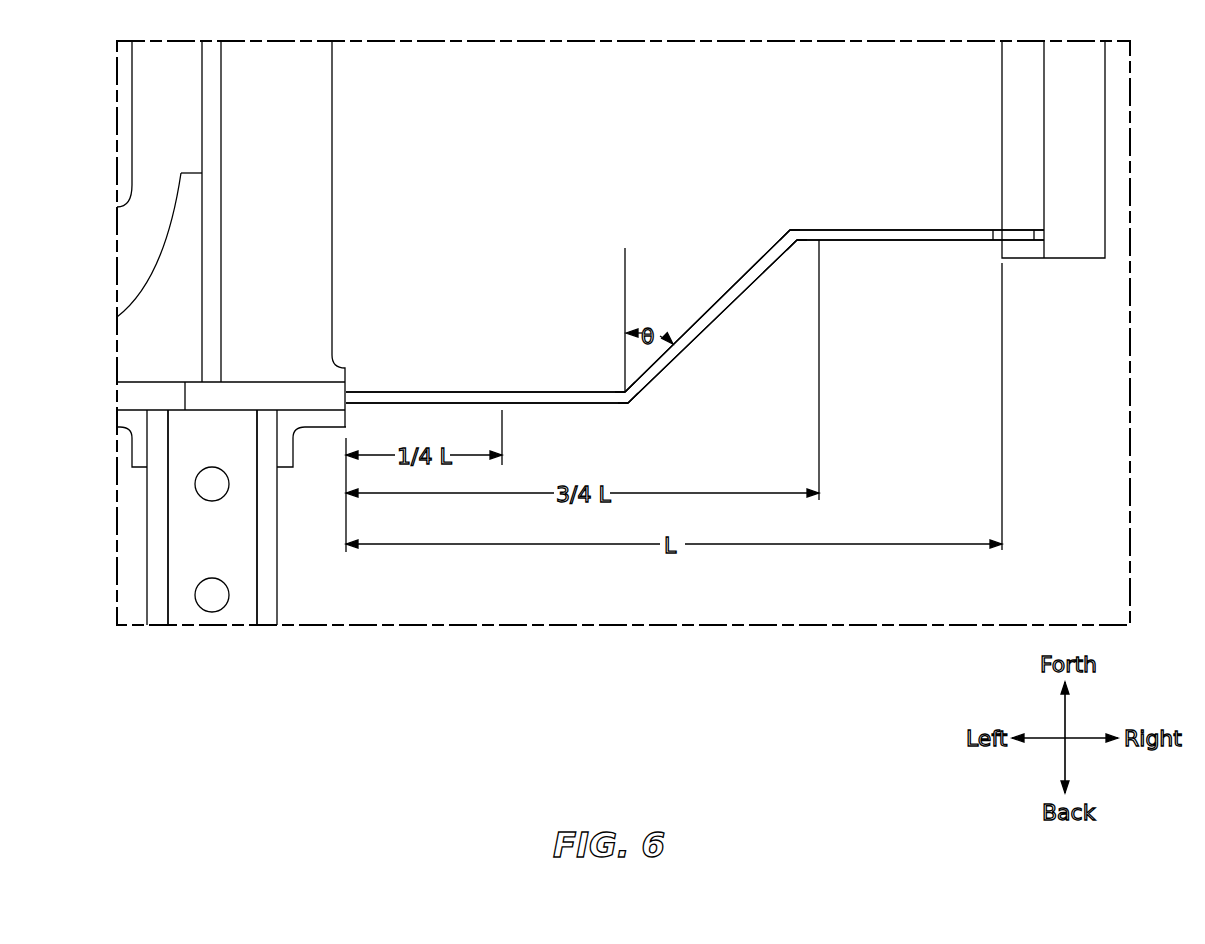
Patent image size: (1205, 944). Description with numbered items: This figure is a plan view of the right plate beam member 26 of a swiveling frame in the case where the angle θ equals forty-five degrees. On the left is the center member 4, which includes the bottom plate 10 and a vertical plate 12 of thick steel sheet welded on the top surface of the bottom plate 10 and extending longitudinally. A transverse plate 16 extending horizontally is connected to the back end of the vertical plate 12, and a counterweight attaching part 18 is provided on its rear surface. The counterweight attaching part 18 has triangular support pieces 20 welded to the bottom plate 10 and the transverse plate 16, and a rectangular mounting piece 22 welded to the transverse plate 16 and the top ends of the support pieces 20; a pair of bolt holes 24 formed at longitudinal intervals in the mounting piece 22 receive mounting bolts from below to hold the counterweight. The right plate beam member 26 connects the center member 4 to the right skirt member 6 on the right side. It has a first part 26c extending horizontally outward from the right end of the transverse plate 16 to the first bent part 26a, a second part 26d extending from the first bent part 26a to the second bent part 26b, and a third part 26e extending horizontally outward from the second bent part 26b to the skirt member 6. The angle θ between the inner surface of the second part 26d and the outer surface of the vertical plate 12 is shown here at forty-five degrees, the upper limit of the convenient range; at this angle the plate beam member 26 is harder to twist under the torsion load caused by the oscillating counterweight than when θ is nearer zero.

The center member 4 is at (337, 157).
The skirt member 6 is at (1095, 157).
The bottom plate 10 is at (298, 252).
The vertical plate 12 is at (212, 72).
The transverse plate 16 is at (265, 390).
The counterweight attaching part 18 is at (135, 607).
The support piece 20 is at (157, 625).
The mounting piece 22 is at (228, 545).
The bolt hole 24 is at (195, 595).
The right plate beam member 26 is at (430, 380).
The first bent part 26a is at (632, 405).
The second bent part 26b is at (787, 228).
The first part 26c is at (513, 392).
The second part 26d is at (747, 268).
The third part 26e is at (944, 242).